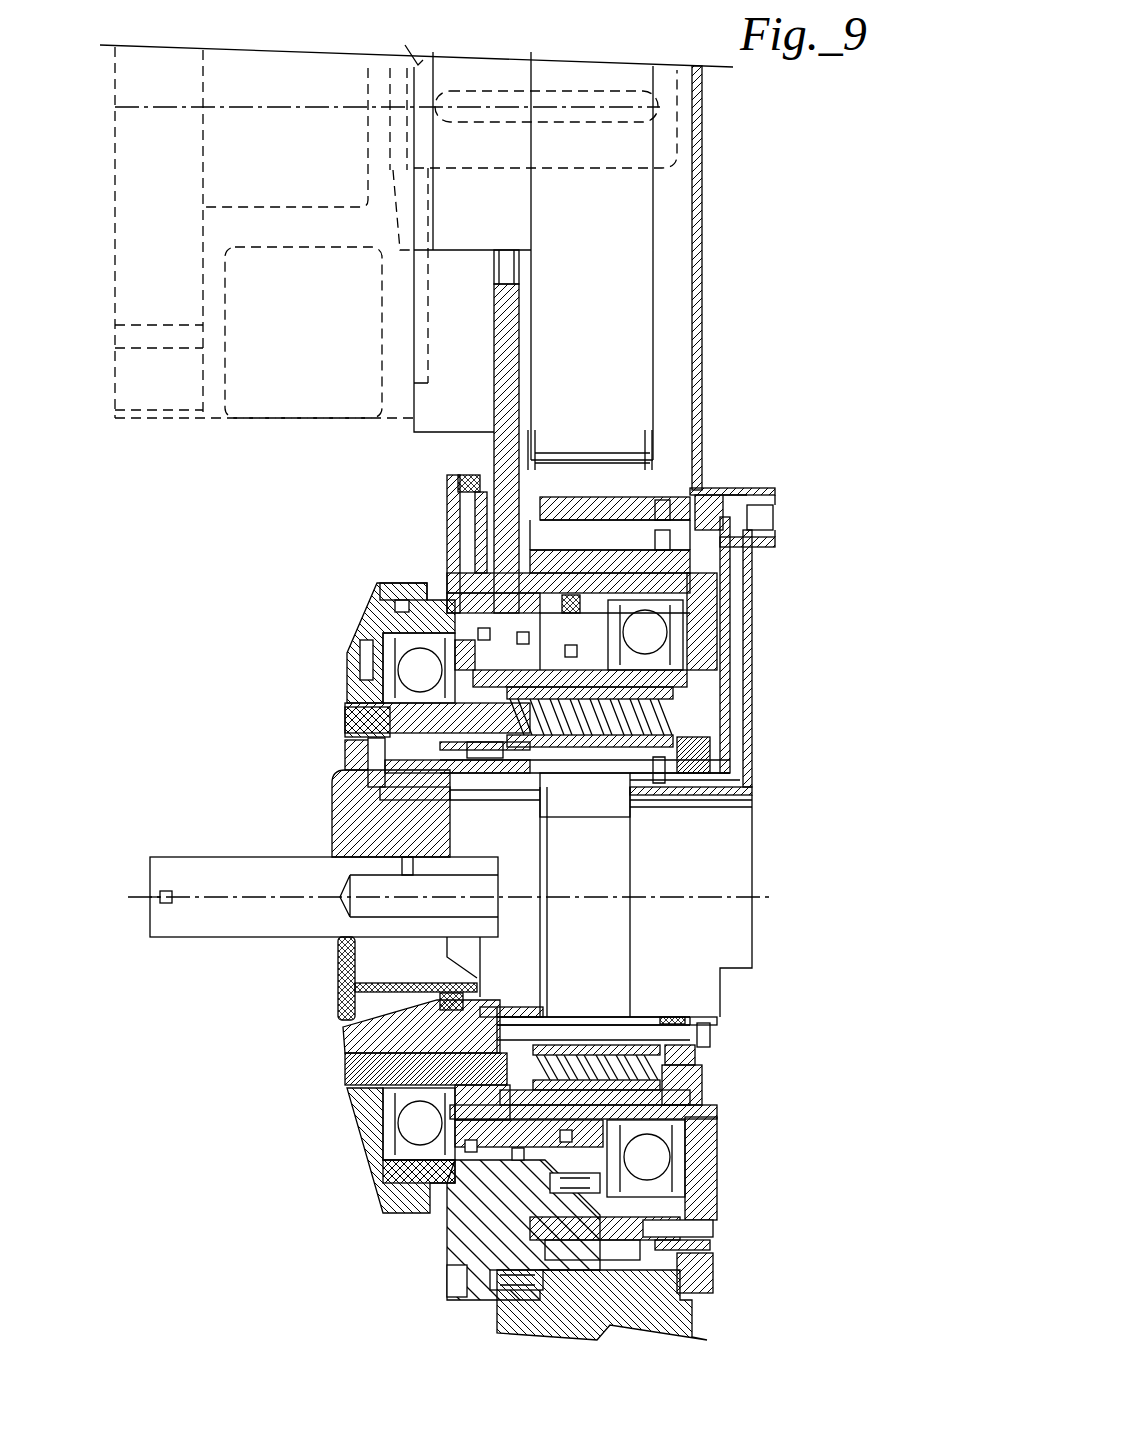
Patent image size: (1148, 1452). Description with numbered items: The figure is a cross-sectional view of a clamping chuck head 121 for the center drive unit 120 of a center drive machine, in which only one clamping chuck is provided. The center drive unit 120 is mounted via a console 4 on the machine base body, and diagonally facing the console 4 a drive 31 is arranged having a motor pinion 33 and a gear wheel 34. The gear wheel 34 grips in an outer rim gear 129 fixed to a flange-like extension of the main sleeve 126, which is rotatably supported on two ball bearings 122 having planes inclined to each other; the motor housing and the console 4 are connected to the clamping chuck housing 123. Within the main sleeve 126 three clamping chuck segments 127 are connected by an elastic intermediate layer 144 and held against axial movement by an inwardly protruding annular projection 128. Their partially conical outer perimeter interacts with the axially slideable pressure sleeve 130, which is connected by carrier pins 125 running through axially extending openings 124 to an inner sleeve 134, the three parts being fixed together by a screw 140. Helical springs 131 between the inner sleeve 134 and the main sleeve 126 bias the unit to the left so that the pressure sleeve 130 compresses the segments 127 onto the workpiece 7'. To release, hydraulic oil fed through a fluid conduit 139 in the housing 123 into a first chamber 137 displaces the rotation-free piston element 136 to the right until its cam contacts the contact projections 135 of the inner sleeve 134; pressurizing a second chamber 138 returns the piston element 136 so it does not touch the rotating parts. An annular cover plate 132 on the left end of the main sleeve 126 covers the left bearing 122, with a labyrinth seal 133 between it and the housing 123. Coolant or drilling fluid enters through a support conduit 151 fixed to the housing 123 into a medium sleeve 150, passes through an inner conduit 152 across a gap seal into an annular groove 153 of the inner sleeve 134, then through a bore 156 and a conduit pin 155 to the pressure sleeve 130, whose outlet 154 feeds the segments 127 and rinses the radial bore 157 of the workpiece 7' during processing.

The console 4 is at (690, 1333).
The workpiece 7' is at (449, 922).
The drive 31 is at (203, 388).
The motor pinion 33 is at (630, 169).
The gear wheel 34 is at (644, 253).
The center drive unit 120 is at (771, 367).
The clamping chuck head 121 is at (197, 630).
The ball bearings 122 is at (660, 630).
The clamping chuck housing 123 is at (430, 597).
The axially extending openings 124 is at (493, 1003).
The carrier pins 125 is at (348, 1030).
The main sleeve 126 is at (673, 760).
The clamping chuck segments 127 is at (338, 848).
The annular projection 128 is at (560, 797).
The outer rim gear 129 is at (727, 507).
The pressure sleeve 130 is at (348, 752).
The helical springs 131 is at (693, 1057).
The annular cover plate 132 is at (348, 668).
The labyrinth seal 133 is at (377, 592).
The inner sleeve 134 is at (592, 1020).
The contact projections 135 is at (398, 1113).
The piston element 136 is at (470, 647).
The first chamber 137 is at (553, 1163).
The second chamber 138 is at (487, 1257).
The fluid conduit 139 is at (467, 518).
The screw 140 is at (710, 1045).
The elastic intermediate layer 144 is at (340, 973).
The medium sleeve 150 is at (713, 1017).
The support conduit 151 is at (740, 668).
The inner conduit 152 is at (717, 783).
The annular groove 153 is at (660, 1022).
The outlet 154 is at (377, 800).
The conduit pin 155 is at (637, 807).
The bore 156 is at (700, 727).
The radial bore 157 is at (403, 873).